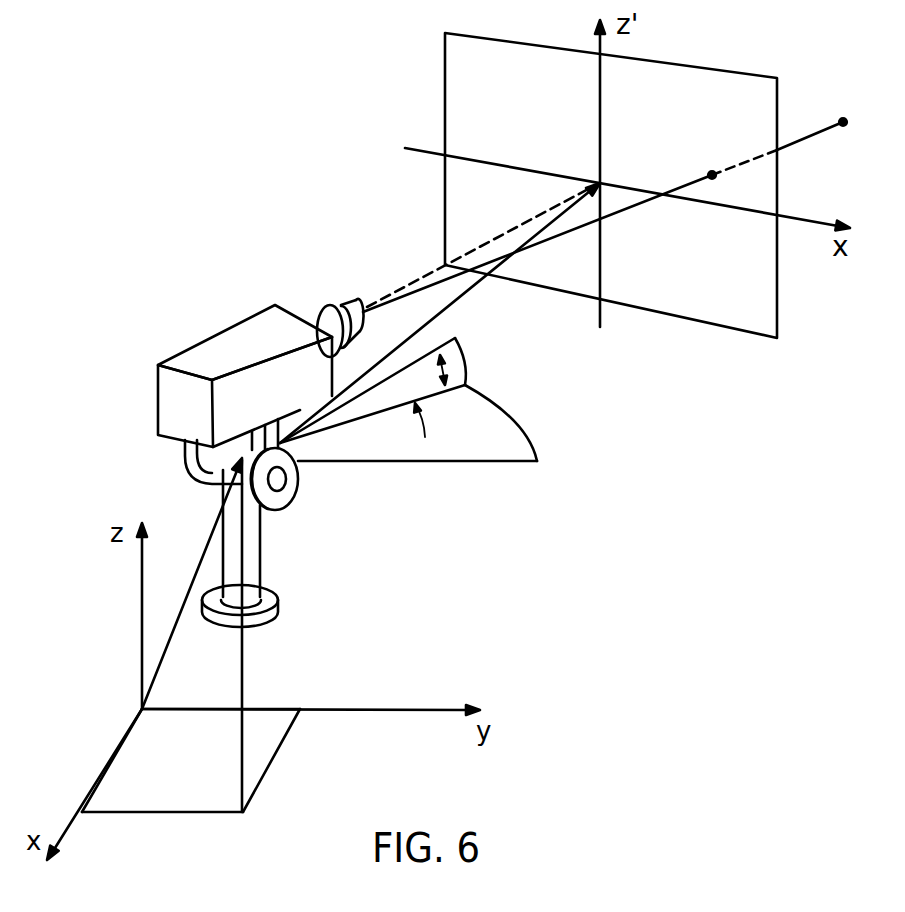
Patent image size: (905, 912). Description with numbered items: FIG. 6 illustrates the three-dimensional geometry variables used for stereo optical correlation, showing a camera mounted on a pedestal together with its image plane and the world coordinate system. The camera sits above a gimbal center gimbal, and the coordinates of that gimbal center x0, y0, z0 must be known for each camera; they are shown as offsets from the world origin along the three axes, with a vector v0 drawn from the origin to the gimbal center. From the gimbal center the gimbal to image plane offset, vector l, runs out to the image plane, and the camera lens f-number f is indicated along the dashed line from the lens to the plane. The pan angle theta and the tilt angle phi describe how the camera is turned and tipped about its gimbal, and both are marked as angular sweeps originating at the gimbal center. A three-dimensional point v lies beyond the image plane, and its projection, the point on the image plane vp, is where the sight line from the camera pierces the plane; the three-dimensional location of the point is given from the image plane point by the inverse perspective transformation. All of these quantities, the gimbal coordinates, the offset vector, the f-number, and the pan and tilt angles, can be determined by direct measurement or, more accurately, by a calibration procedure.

The point v is at (606, 199).
The point on the image plane vp is at (696, 151).
The camera lens f-number f is at (479, 247).
The gimbal to image plane offset vector l is at (440, 313).
The tilt angle phi is at (443, 364).
The pan angle theta is at (467, 423).
The gimbal center gimbal is at (228, 458).
The gimbal center x coordinate x0 is at (278, 760).
The gimbal center y coordinate y0 is at (162, 832).
The gimbal center z coordinate z0 is at (260, 636).
The position vector v0 of gimbal center v0 is at (192, 583).